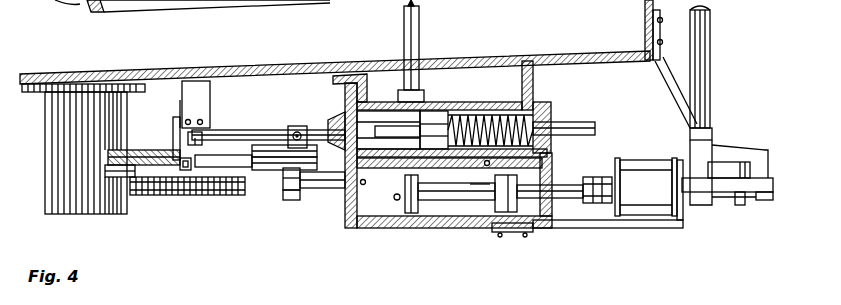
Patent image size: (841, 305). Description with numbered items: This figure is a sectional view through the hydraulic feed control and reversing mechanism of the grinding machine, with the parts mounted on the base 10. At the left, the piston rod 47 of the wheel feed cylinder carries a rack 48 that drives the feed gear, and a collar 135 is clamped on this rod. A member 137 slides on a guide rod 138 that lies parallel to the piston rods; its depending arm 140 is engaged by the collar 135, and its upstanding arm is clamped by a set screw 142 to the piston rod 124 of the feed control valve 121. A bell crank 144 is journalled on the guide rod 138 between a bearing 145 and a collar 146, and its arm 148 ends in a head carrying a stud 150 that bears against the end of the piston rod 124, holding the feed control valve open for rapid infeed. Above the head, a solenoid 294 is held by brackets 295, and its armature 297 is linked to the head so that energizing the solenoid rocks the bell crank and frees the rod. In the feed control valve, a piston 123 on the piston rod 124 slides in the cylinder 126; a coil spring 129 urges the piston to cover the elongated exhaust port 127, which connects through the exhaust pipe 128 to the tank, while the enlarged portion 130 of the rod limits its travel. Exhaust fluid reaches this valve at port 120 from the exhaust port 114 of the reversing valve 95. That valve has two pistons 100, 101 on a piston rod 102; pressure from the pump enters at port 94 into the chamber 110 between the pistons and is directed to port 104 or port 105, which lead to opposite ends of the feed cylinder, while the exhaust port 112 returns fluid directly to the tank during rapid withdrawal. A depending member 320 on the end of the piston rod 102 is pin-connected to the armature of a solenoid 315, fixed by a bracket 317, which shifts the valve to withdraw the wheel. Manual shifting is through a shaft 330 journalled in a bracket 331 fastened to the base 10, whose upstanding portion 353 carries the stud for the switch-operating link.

The base 10 is at (262, 70).
The piston rod 47 is at (322, 189).
The rack 48 is at (225, 196).
The port 94 is at (480, 176).
The reversing valve 95 is at (363, 186).
The piston 100 is at (413, 212).
The piston 101 is at (520, 215).
The piston rod 102 is at (445, 200).
The port 104 is at (393, 197).
The port 105 is at (497, 233).
The chamber 110 is at (500, 212).
The exhaust port 112 is at (348, 210).
The exhaust port 114 is at (525, 164).
The port 120 is at (338, 128).
The feed control valve 121 is at (545, 108).
The piston 123 is at (438, 125).
The piston rod 124 is at (592, 121).
The feed control valve cylinder 126 is at (478, 112).
The exhaust port 127 is at (390, 112).
The exhaust pipe 128 is at (420, 56).
The coil spring 129 is at (548, 145).
The enlarged portion 130 is at (345, 99).
The collar 135 is at (288, 192).
The member 137 is at (276, 160).
The guide rod 138 is at (240, 158).
The depending arm 140 is at (292, 201).
The set screw 142 is at (295, 128).
The bell crank 144 is at (155, 152).
The bearing 145 is at (126, 178).
The collar 146 is at (186, 171).
The arm 148 is at (176, 140).
The stud 150 is at (219, 130).
The solenoid 294 is at (181, 120).
The brackets 295 is at (201, 95).
The armature 297 is at (197, 146).
The solenoid 315 is at (650, 198).
The bracket 317 is at (592, 228).
The depending member 320 is at (598, 203).
The shaft 330 is at (708, 15).
The bracket 331 is at (668, 73).
The upstanding portion 353 is at (752, 155).